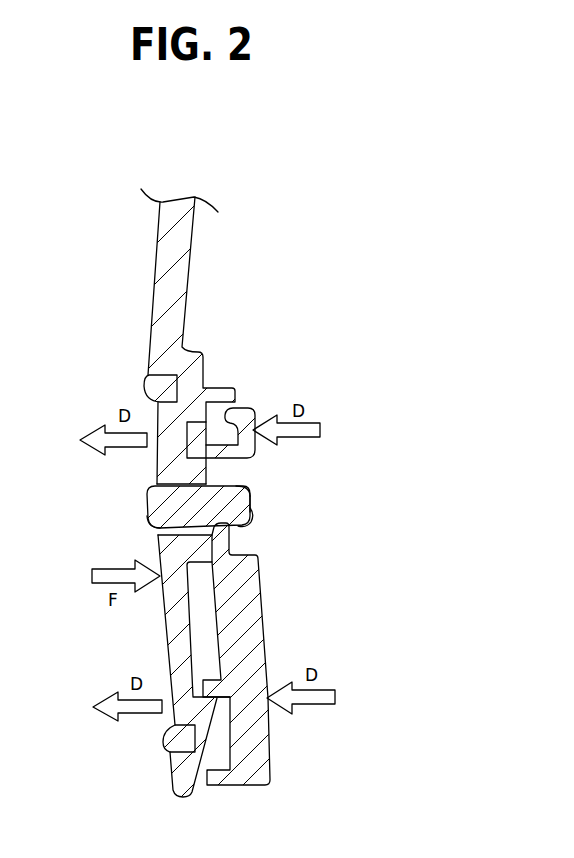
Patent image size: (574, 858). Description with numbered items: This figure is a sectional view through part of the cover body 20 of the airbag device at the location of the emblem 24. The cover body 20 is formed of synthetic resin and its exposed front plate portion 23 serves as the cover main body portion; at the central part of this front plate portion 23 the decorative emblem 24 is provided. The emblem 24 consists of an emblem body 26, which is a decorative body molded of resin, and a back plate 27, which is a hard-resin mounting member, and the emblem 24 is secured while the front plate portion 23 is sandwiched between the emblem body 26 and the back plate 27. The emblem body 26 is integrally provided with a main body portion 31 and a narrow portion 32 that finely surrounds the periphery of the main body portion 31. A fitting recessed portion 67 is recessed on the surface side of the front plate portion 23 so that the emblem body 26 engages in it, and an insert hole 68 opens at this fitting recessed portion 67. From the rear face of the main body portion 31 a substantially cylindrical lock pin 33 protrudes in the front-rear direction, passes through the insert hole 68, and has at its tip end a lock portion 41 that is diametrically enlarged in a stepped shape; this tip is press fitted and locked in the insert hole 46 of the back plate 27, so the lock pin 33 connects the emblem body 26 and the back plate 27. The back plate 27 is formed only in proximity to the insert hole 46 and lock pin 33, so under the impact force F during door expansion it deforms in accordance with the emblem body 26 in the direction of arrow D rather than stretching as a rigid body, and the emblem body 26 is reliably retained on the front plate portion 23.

The cover body 20 is at (143, 313).
The front plate portion 23 is at (157, 360).
The emblem 24 is at (264, 388).
The fitting recessed portion 67 is at (144, 386).
The emblem body 26 is at (155, 485).
The main body portion 31 is at (149, 505).
The insert hole 68 is at (150, 523).
The lock portion 41 is at (238, 485).
The insert hole 46 is at (243, 506).
The lock pin 33 is at (252, 518).
The back plate 27 is at (266, 636).
The narrow portion 32 is at (163, 740).